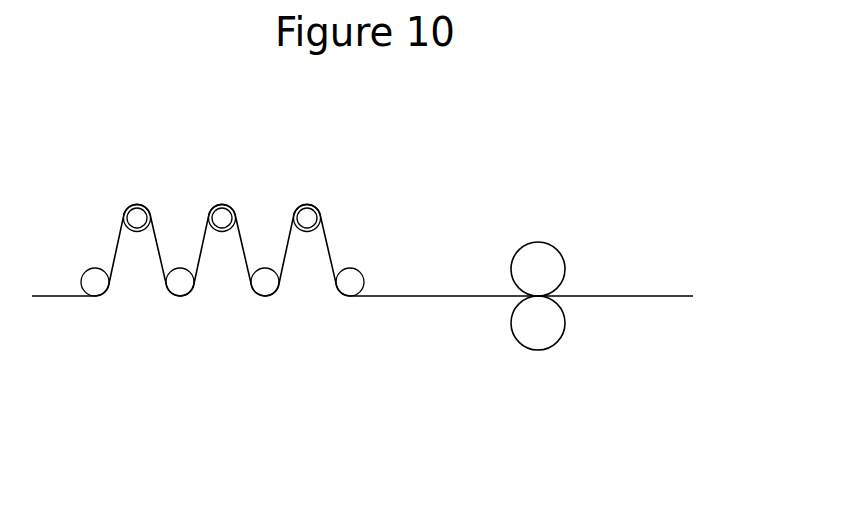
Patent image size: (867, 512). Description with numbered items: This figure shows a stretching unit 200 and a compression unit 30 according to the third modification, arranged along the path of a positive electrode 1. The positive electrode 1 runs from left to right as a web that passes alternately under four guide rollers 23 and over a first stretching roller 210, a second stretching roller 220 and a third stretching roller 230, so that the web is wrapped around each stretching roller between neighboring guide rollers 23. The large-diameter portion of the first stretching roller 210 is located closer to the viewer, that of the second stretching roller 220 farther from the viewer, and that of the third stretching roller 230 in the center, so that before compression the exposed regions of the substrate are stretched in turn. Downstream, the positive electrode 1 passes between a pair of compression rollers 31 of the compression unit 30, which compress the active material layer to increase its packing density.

The positive electrode 1 is at (643, 296).
The guide rollers 23 is at (94, 284).
The compression unit 30 is at (539, 323).
The compression rollers 31 is at (539, 260).
The stretching unit 200 is at (222, 289).
The first stretching roller 210 is at (137, 216).
The second stretching roller 220 is at (222, 216).
The third stretching roller 230 is at (307, 216).